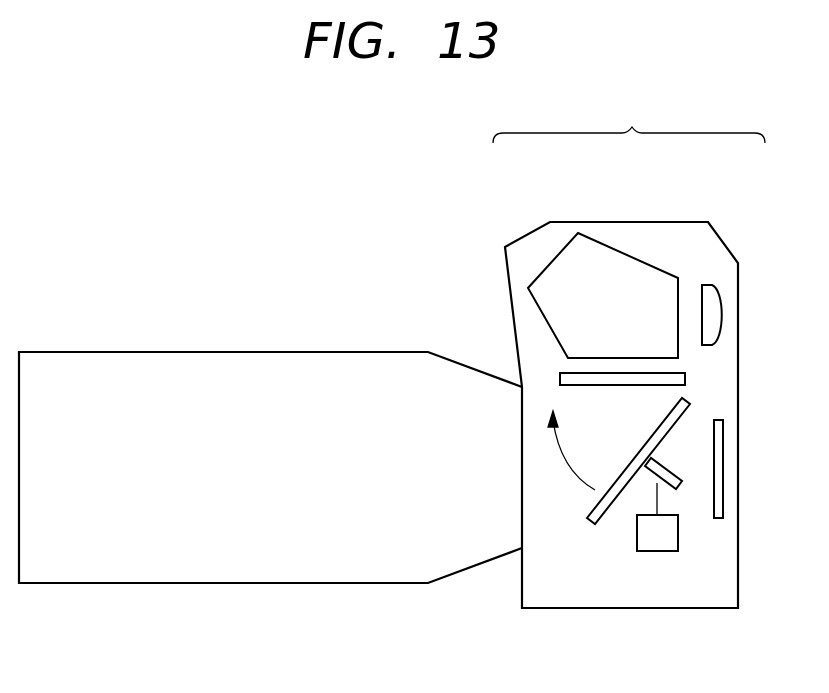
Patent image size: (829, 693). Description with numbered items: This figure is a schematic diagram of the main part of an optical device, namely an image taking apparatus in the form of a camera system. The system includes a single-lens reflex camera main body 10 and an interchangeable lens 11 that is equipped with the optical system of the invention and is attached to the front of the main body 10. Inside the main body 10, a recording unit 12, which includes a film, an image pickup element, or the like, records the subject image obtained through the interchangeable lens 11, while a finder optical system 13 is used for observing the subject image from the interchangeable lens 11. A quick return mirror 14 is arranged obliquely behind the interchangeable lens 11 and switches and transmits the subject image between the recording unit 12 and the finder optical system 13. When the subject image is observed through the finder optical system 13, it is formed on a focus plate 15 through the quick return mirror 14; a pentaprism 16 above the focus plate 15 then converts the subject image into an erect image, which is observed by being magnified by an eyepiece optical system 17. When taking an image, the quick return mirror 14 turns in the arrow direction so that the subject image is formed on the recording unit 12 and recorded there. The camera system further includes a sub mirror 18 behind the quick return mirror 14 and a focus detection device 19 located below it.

The single-lens reflex camera main body 10 is at (698, 587).
The interchangeable lens 11 is at (290, 568).
The recording unit 12 is at (723, 503).
The finder optical system 13 is at (629, 121).
The quick return mirror 14 is at (607, 512).
The focus plate 15 is at (593, 377).
The pentaprism 16 is at (623, 270).
The eyepiece optical system 17 is at (713, 292).
The sub mirror 18 is at (670, 467).
The focus detection device 19 is at (653, 543).